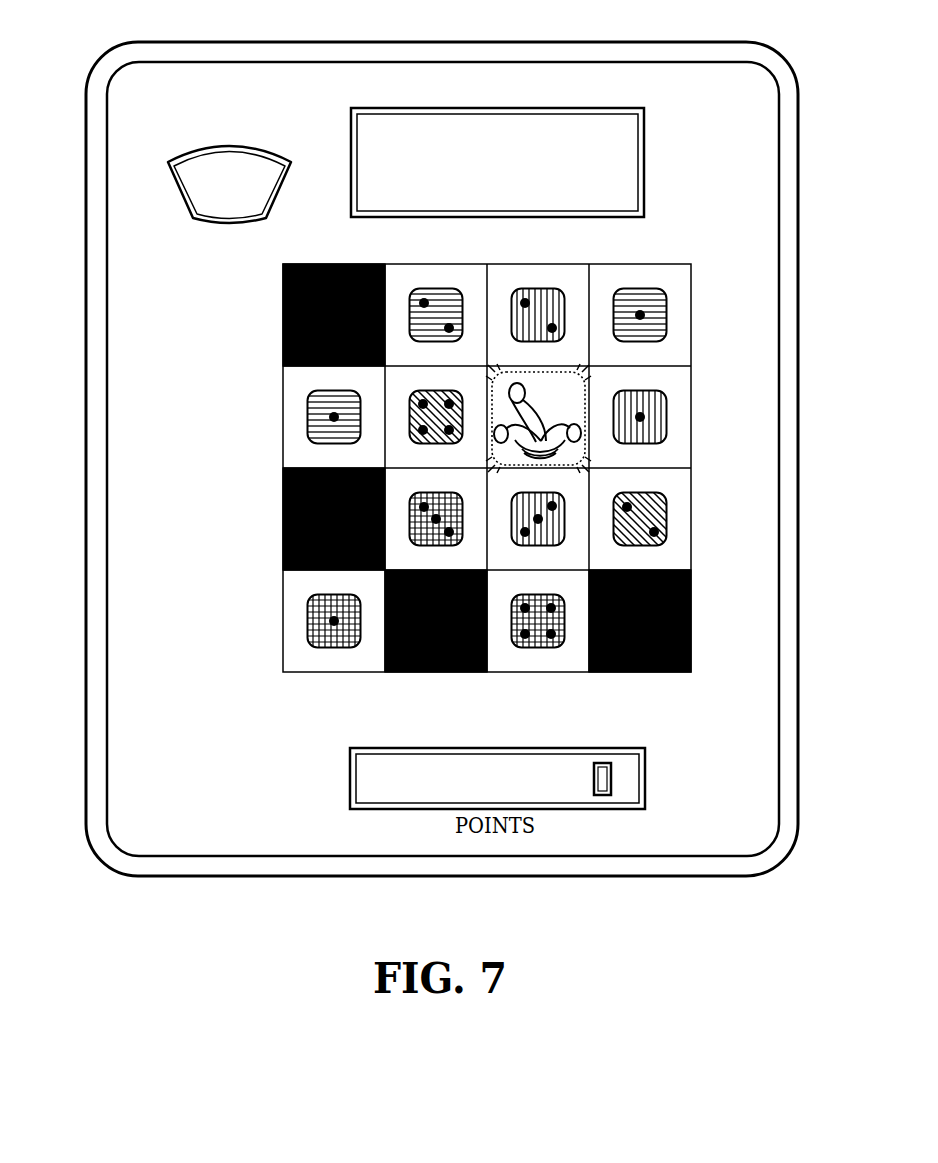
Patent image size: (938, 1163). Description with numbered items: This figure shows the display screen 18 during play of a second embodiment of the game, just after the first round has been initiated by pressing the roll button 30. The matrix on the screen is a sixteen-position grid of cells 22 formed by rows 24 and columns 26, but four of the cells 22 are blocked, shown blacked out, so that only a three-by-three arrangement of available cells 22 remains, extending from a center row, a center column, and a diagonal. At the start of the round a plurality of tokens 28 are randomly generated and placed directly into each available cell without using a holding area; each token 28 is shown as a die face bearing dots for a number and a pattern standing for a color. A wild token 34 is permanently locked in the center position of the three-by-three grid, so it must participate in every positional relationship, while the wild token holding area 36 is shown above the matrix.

The display screen 18 is at (146, 718).
The cells 22 is at (538, 265).
The rows 24 is at (706, 555).
The columns 26 is at (343, 256).
The tokens 28 is at (670, 318).
The roll button 30 is at (198, 200).
The wild token 34 is at (566, 372).
The wild token holding area 36 is at (602, 126).